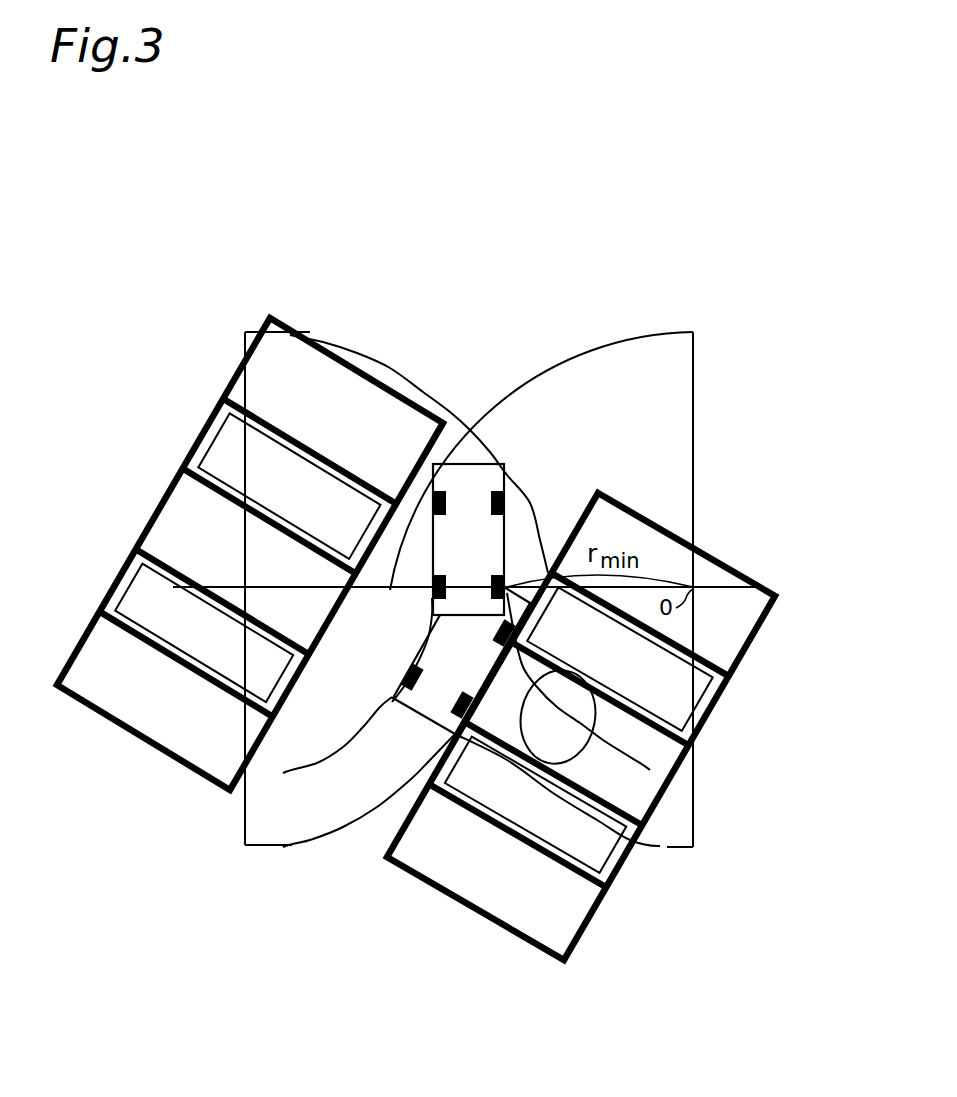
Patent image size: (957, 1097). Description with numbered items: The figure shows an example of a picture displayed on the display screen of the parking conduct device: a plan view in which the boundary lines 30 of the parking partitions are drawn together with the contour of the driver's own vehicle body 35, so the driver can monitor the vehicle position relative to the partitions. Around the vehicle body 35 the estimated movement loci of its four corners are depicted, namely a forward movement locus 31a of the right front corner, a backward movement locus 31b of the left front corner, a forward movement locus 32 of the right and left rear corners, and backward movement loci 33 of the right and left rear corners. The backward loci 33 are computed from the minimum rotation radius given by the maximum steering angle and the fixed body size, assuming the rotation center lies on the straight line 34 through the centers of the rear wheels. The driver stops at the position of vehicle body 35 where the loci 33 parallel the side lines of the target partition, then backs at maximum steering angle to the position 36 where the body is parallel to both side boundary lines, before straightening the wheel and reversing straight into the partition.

The boundary lines of parking partitions 30 is at (600, 515).
The forward movement locus of right front corner 31a is at (500, 445).
The backward movement locus of left front corner 31b is at (590, 350).
The forward movement locus of right and left rear corners 32 is at (283, 773).
The backward movement loci of right and left rear corners 33 is at (650, 770).
The straight line passing through the centers of the right and left rear wheels 34 is at (722, 587).
The vehicle body 35 is at (505, 540).
The position within the target partition 36 is at (580, 722).